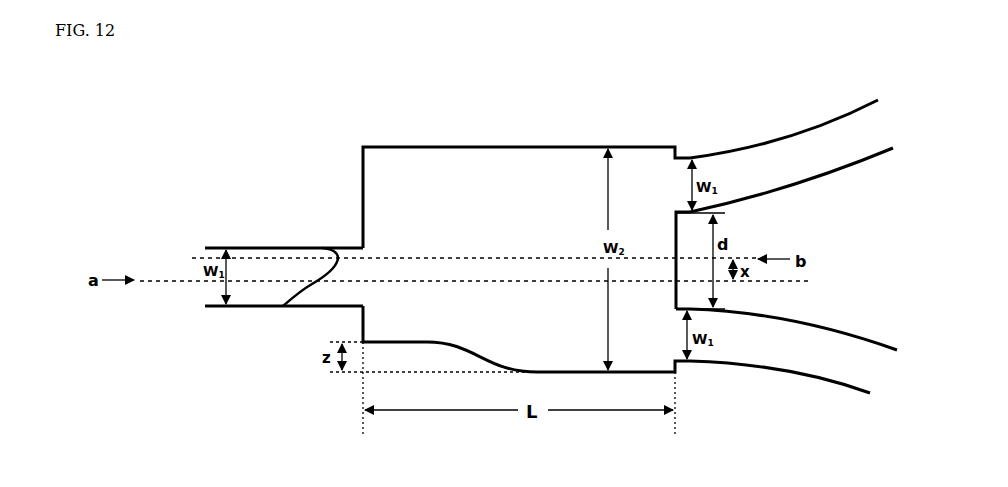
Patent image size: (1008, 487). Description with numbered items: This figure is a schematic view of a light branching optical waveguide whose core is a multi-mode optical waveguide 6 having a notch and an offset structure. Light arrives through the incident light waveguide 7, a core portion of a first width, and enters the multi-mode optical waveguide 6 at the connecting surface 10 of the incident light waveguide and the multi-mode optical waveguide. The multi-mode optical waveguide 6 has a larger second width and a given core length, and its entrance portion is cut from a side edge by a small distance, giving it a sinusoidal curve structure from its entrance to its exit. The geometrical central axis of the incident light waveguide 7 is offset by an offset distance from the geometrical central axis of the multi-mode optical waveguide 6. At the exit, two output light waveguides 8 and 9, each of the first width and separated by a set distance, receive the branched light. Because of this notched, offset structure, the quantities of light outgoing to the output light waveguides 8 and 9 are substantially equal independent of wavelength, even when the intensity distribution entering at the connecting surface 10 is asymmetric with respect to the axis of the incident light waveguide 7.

The multi-mode optical waveguide 6 is at (532, 153).
The incident light waveguide 7 is at (280, 292).
The output light waveguide 8 is at (805, 148).
The output light waveguide 9 is at (808, 361).
The connecting surface of incident light waveguide and multi-mode optical waveguide 10 is at (362, 191).